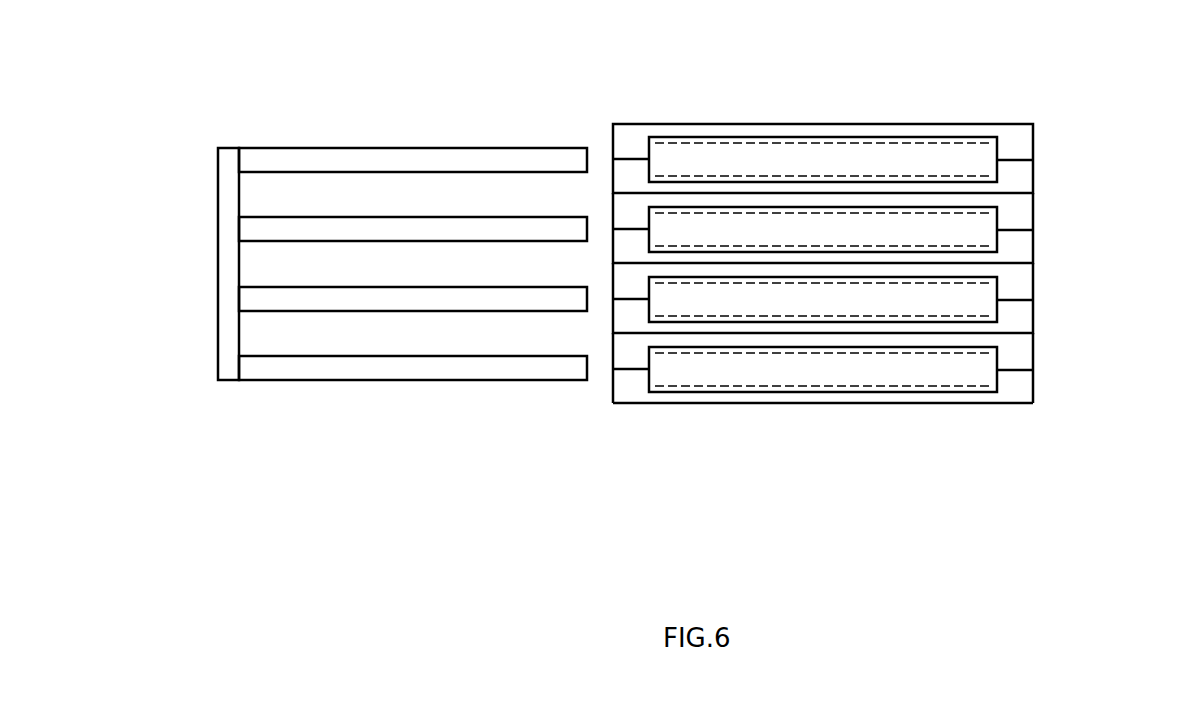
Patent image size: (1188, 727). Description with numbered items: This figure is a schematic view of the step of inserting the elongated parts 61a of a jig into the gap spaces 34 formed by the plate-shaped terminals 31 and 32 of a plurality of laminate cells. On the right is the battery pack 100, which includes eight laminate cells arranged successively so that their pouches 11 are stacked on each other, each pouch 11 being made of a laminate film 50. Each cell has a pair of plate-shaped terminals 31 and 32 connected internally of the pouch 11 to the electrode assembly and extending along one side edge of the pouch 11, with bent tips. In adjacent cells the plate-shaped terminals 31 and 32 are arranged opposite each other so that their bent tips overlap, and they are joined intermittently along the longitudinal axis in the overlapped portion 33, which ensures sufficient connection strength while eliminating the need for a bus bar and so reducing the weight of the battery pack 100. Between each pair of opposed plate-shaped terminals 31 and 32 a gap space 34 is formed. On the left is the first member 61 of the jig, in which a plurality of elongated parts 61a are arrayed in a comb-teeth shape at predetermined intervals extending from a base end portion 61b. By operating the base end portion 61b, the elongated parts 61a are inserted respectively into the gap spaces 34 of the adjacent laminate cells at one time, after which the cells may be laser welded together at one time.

The battery pack 100 is at (871, 251).
The pouch 11 is at (871, 273).
The plate-shaped terminal 31 is at (860, 135).
The plate-shaped terminal 32 is at (904, 186).
The overlapped portion 33 is at (800, 155).
The gap space 34 is at (645, 152).
The laminate film 50 is at (857, 404).
The first member 61 is at (375, 217).
The elongated part 61a is at (396, 145).
The base end portion 61b is at (218, 197).